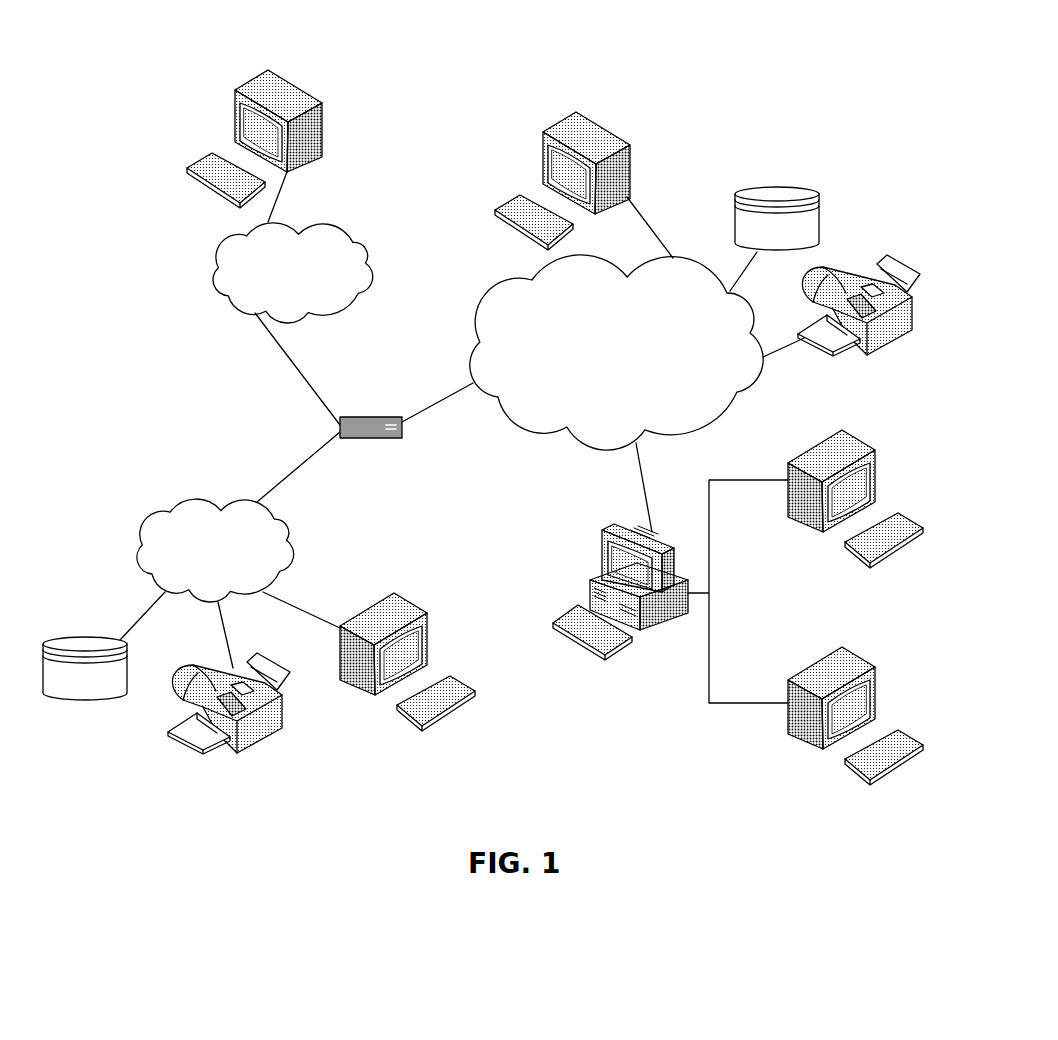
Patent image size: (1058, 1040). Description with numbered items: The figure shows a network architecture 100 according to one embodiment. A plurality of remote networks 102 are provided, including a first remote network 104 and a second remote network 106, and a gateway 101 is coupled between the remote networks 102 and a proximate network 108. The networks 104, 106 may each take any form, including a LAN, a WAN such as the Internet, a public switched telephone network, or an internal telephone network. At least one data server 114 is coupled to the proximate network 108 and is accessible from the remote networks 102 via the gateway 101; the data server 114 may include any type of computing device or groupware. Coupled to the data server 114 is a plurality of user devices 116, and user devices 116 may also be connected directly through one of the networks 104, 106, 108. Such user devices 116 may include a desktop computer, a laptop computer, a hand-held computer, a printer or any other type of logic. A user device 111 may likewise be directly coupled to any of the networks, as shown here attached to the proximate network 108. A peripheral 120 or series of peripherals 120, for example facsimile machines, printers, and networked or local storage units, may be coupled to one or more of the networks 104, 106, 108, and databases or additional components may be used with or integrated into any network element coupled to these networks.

The architecture 100 is at (162, 52).
The gateway 101 is at (350, 416).
The remote networks 102 is at (192, 334).
The first remote network 104 is at (146, 520).
The second remote network 106 is at (362, 243).
The proximate network 108 is at (723, 417).
The user device 111 is at (628, 147).
The data server 114 is at (602, 548).
The user devices 116 is at (322, 111).
The peripheral 120 is at (85, 703).